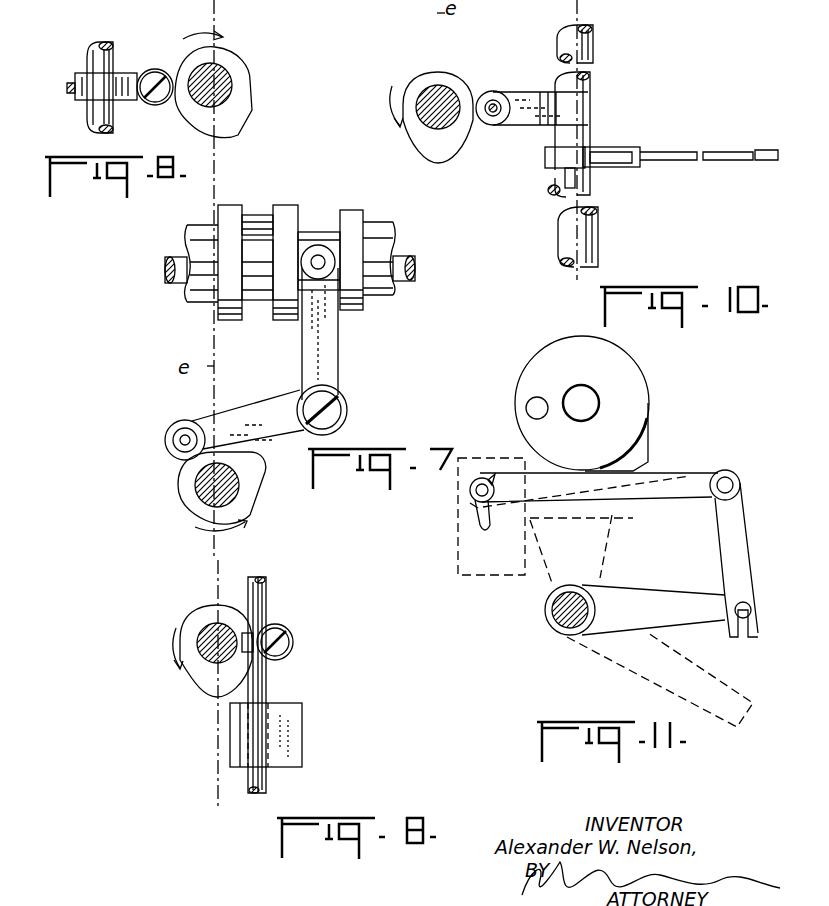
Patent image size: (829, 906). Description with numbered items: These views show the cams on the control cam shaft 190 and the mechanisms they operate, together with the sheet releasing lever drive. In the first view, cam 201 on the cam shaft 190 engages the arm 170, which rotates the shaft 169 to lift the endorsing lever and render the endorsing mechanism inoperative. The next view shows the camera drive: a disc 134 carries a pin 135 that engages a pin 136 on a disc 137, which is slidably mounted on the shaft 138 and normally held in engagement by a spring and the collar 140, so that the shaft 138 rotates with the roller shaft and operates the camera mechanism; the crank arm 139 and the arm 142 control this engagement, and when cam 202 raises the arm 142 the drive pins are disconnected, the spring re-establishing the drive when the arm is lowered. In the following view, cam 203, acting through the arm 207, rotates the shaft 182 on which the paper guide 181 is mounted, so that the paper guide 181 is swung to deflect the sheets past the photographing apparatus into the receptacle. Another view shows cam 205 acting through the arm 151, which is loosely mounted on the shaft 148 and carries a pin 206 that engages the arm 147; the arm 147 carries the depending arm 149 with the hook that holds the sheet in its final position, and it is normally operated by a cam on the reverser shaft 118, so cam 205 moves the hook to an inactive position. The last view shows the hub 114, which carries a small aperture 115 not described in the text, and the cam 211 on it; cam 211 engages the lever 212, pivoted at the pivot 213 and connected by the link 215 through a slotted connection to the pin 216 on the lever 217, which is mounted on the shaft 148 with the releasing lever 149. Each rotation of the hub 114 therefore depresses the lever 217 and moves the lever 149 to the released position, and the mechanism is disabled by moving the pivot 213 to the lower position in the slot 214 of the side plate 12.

In FIG. 6, the shaft 169 is at (92, 60).
In FIG. 6, the arm 170 is at (127, 78).
In FIG. 6, the cam shaft 190 is at (218, 82).
In FIG. 7, the cam shaft 190 is at (197, 493).
In FIG. 8, the cam shaft 190 is at (212, 622).
In FIG. 10, the cam shaft 190 is at (449, 93).
In FIG. 6, the cam 201 is at (229, 128).
In FIG. 7, the disc 134 is at (231, 320).
In FIG. 7, the pin 135 is at (245, 214).
In FIG. 7, the pin 136 is at (257, 216).
In FIG. 7, the disc 137 is at (285, 320).
In FIG. 7, the shaft 138 is at (415, 265).
In FIG. 7, the crank arm 139 is at (332, 347).
In FIG. 7, the collar 140 is at (378, 229).
In FIG. 7, the arm 142 is at (286, 408).
In FIG. 7, the cam 202 is at (249, 493).
In FIG. 8, the cam 203 is at (194, 667).
In FIG. 8, the arm 207 is at (298, 642).
In FIG. 8, the shaft 182 is at (272, 688).
In FIG. 8, the paper guide 181 is at (292, 717).
In FIG. 10, the cam 205 is at (411, 128).
In FIG. 10, the arm 151 is at (533, 87).
In FIG. 10, the pin 206 is at (552, 139).
In FIG. 10, the arm 147 is at (595, 146).
In FIG. 10, the shaft 148 is at (580, 183).
In FIG. 11, the shaft 148 is at (547, 615).
In FIG. 10, the depending arm 149 is at (692, 158).
In FIG. 11, the depending arm 149 is at (653, 683).
In FIG. 10, the reverser shaft 118 is at (593, 53).
In FIG. 11, the hub 114 is at (637, 393).
In FIG. 11, the hole 115 is at (527, 412).
In FIG. 11, the cam 211 is at (641, 448).
In FIG. 11, the lever 212 is at (677, 493).
In FIG. 11, the pivot 213 is at (472, 500).
In FIG. 11, the slot 214 is at (480, 518).
In FIG. 11, the side plate 12 is at (472, 556).
In FIG. 11, the link 215 is at (730, 550).
In FIG. 11, the pin 216 is at (743, 614).
In FIG. 11, the lever 217 is at (690, 591).